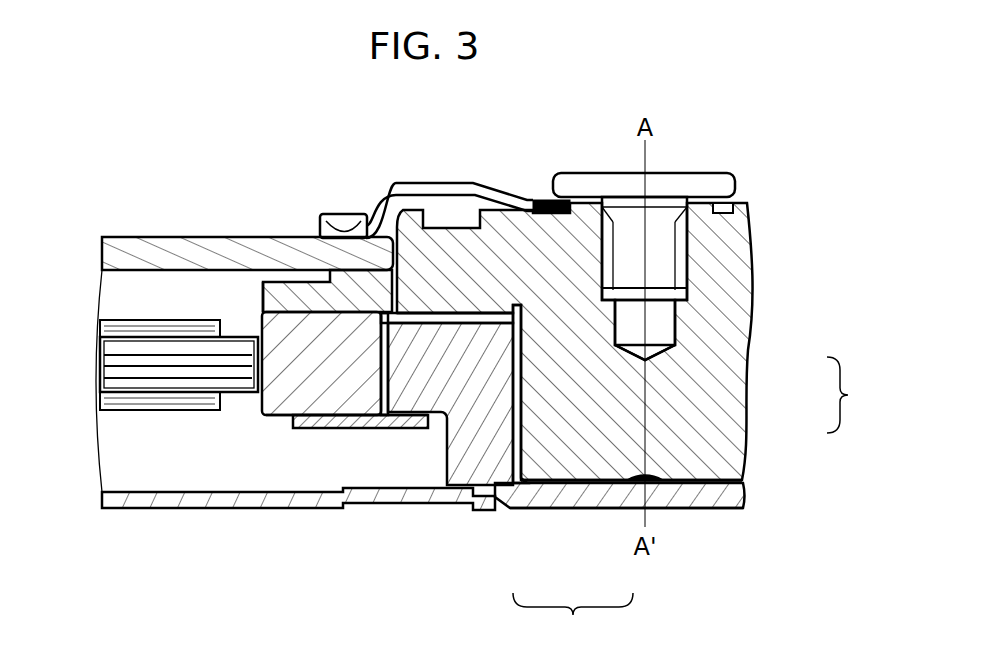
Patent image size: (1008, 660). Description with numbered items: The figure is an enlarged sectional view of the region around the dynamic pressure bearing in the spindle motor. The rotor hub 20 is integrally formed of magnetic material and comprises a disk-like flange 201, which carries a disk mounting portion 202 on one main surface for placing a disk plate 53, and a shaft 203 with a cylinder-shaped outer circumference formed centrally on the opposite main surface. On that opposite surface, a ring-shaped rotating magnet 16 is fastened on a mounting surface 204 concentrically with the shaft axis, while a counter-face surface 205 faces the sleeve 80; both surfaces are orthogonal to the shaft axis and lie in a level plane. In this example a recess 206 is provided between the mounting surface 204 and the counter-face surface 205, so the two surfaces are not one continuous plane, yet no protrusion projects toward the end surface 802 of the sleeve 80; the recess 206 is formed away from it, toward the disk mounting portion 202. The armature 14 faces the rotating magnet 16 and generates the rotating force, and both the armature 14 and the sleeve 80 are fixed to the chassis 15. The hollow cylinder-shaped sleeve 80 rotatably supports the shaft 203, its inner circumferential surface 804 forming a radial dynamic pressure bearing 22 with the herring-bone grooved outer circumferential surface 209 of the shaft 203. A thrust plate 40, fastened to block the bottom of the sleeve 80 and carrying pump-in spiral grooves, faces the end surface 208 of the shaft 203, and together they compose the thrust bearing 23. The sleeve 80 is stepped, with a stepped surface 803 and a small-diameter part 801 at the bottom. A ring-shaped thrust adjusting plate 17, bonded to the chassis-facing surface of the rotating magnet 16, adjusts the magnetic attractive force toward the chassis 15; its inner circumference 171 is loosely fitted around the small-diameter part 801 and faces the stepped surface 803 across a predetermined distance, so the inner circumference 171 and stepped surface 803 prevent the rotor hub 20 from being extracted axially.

The armature 14 is at (133, 358).
The chassis 15 is at (125, 500).
The rotating magnet 16 is at (295, 368).
The thrust adjusting plate 17 is at (318, 420).
The inner circumference 171 is at (390, 424).
The rotor hub 20 is at (550, 247).
The flange 201 is at (327, 293).
The disk mounting portion 202 is at (333, 213).
The shaft 203 is at (535, 417).
The mounting surface 204 is at (270, 305).
The counter-face surface 205 is at (500, 303).
The recess 206 is at (362, 218).
The end surface 208 is at (553, 507).
The outer circumferential surface 209 is at (523, 390).
The radial dynamic pressure bearing 22 is at (860, 395).
The thrust bearing 23 is at (573, 625).
The thrust plate 40 is at (618, 500).
The disk plate 53 is at (137, 250).
The sleeve 80 is at (477, 352).
The small-diameter part 801 is at (465, 440).
The end surface 802 is at (423, 312).
The stepped surface 803 is at (405, 422).
The inner circumferential surface 804 is at (523, 362).